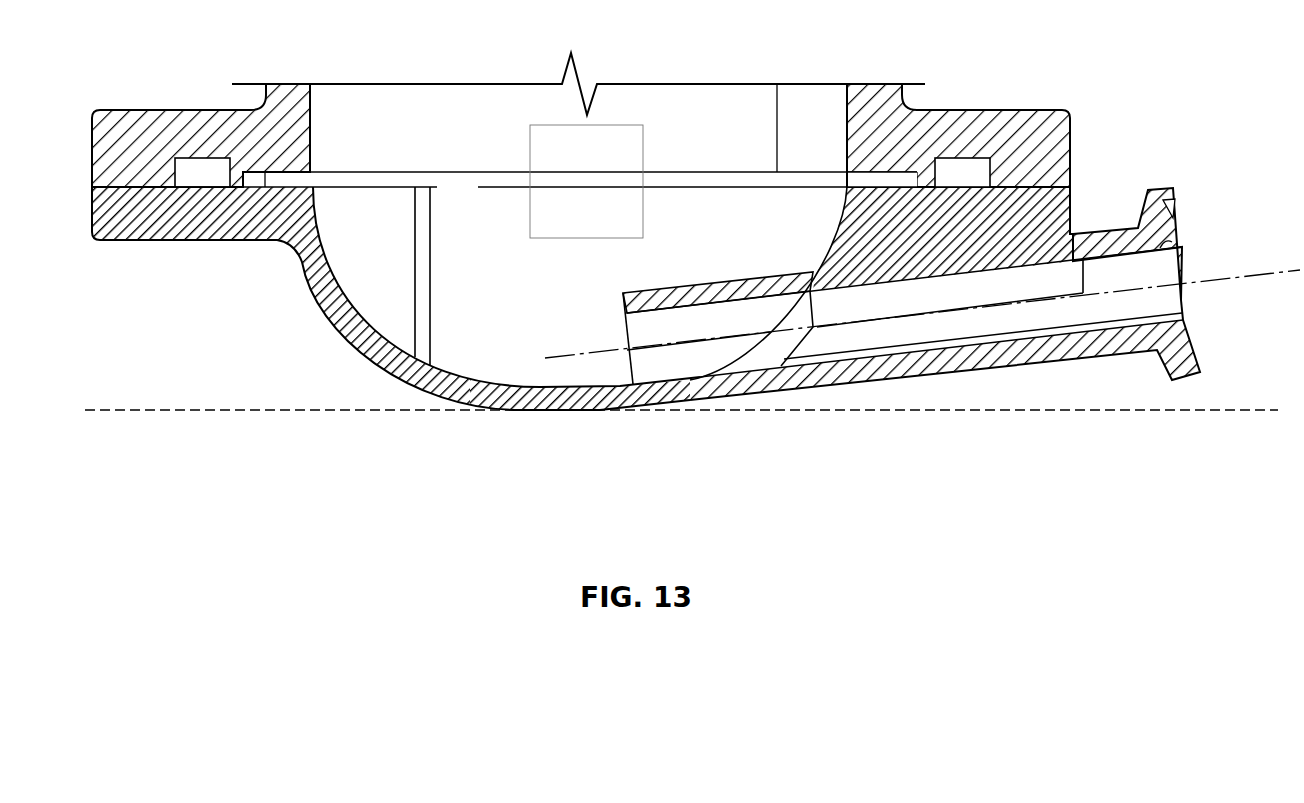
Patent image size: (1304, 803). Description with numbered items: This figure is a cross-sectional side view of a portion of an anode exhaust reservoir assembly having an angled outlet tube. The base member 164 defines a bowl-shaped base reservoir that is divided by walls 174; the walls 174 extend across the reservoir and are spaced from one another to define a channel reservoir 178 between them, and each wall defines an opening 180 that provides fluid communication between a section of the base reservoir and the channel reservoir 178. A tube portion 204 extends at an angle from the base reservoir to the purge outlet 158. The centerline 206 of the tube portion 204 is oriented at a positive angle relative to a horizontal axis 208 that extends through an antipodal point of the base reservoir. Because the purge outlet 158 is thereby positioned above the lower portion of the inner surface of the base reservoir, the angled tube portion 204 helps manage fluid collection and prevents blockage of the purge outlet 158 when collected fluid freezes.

The purge outlet 158 is at (1170, 242).
The base member 164 is at (462, 406).
The walls 174 is at (380, 220).
The channel reservoir 178 is at (513, 302).
The opening 180 is at (413, 256).
The tube portion 204 is at (802, 388).
The centerline 206 is at (1228, 282).
The horizontal axis 208 is at (1173, 411).